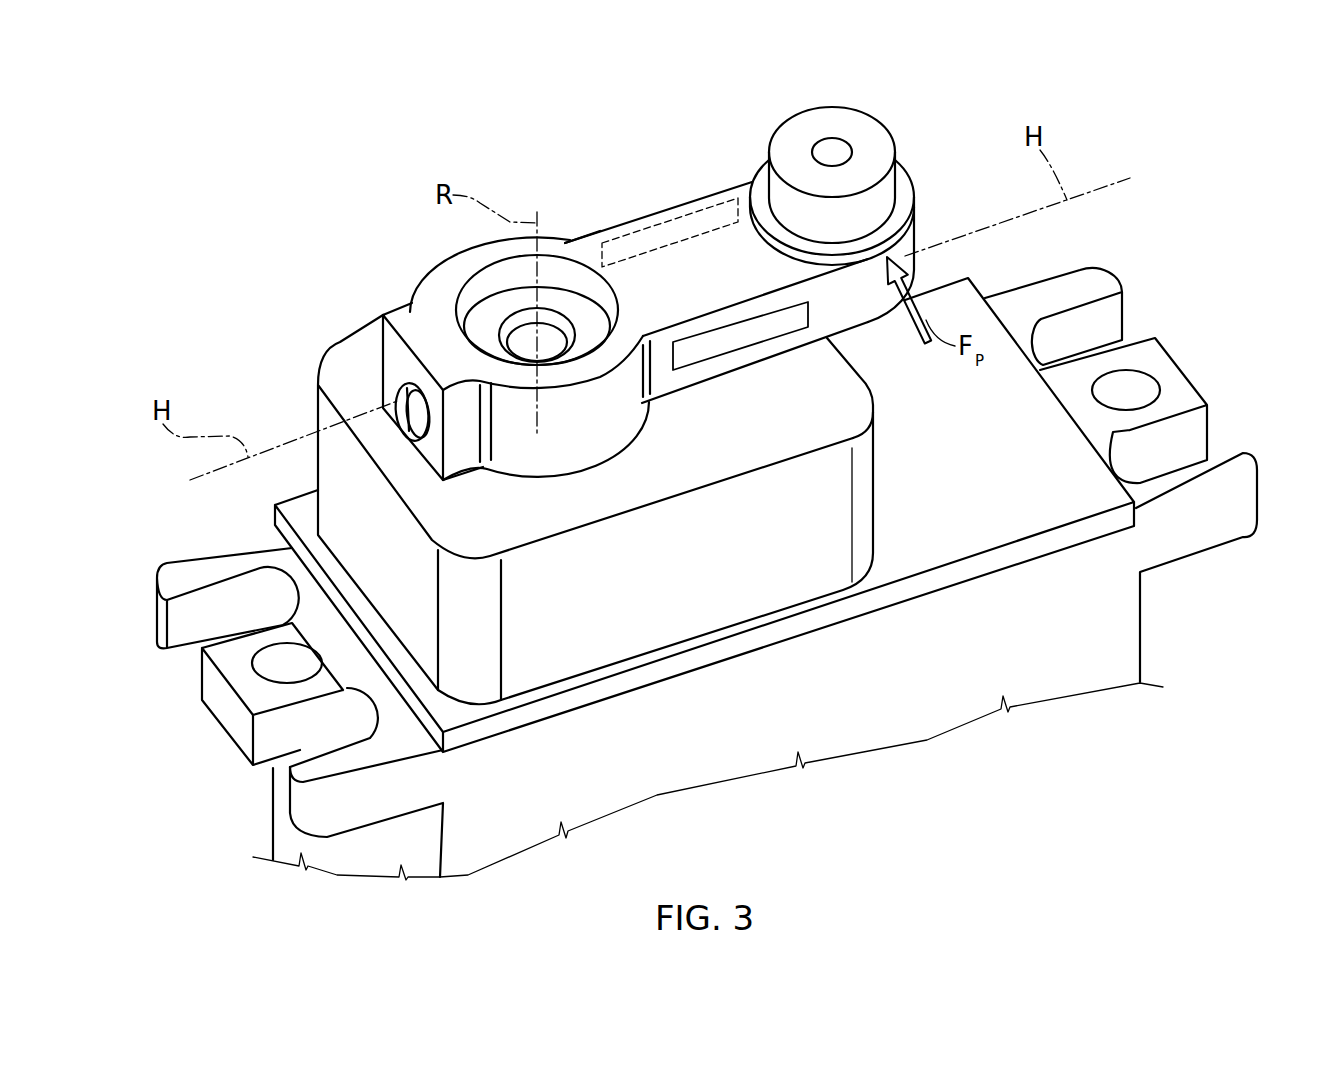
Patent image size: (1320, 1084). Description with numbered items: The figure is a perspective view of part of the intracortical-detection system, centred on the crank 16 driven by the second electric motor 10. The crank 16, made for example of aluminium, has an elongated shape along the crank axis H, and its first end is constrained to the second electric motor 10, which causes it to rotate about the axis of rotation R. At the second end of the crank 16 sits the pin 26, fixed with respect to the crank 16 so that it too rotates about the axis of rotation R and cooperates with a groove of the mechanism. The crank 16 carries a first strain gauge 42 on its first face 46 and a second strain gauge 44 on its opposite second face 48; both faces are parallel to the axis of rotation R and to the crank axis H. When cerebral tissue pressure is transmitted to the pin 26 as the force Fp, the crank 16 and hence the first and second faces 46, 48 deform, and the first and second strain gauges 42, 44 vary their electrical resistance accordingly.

The second electric motor 10 is at (332, 420).
The crank 16 is at (745, 191).
The pin 26 is at (876, 137).
The first strain gauge 42 is at (678, 195).
The second strain gauge 44 is at (703, 362).
The first face 46 is at (600, 223).
The second face 48 is at (853, 300).